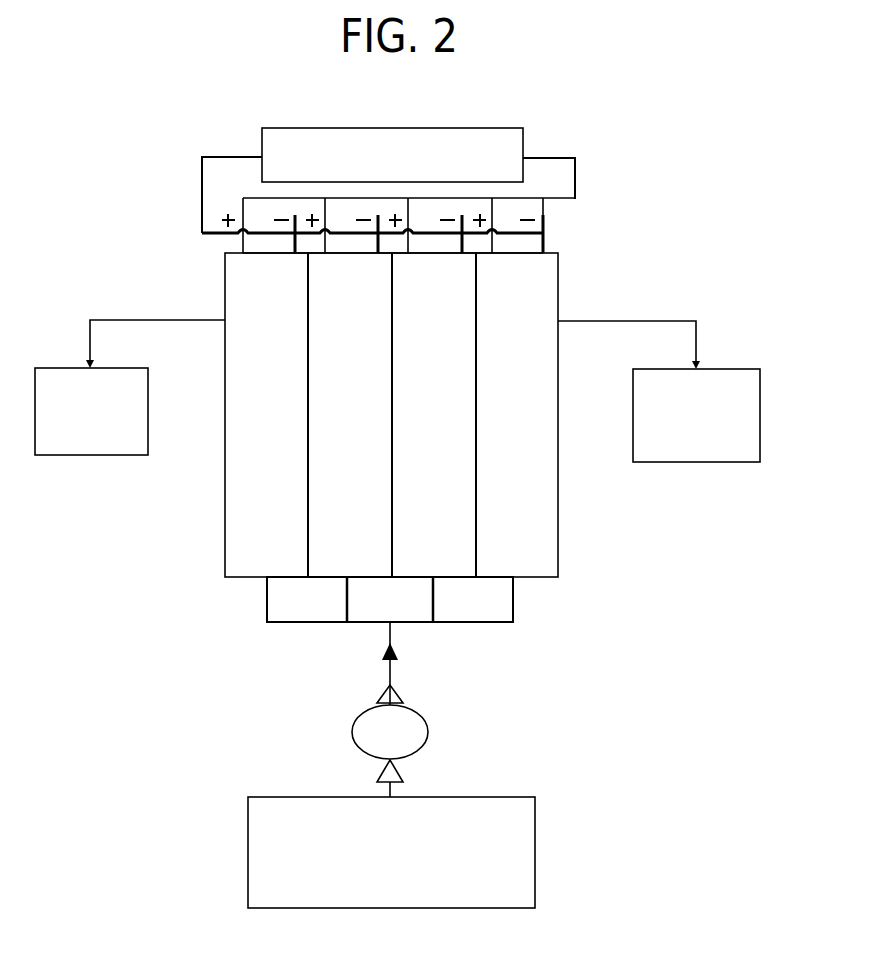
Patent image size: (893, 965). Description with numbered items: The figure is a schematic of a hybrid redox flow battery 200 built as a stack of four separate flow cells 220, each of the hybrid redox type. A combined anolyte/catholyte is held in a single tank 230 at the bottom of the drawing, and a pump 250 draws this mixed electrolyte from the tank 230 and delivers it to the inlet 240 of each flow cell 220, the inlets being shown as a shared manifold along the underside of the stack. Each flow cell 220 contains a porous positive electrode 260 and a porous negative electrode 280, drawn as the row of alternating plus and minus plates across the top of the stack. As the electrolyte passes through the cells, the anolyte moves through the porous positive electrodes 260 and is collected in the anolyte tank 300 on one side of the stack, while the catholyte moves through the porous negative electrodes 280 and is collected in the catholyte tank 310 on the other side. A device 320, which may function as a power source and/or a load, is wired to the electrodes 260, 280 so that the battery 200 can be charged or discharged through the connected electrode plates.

The hybrid redox flow battery 200 is at (604, 152).
The flow cell 220 is at (247, 478).
The tank 230 is at (535, 838).
The inlet 240 is at (267, 580).
The pump 250 is at (428, 732).
The porous positive electrode 260 is at (242, 207).
The porous negative electrode 280 is at (543, 242).
The anolyte tank 300 is at (90, 455).
The catholyte tank 310 is at (696, 462).
The device 320 is at (415, 128).